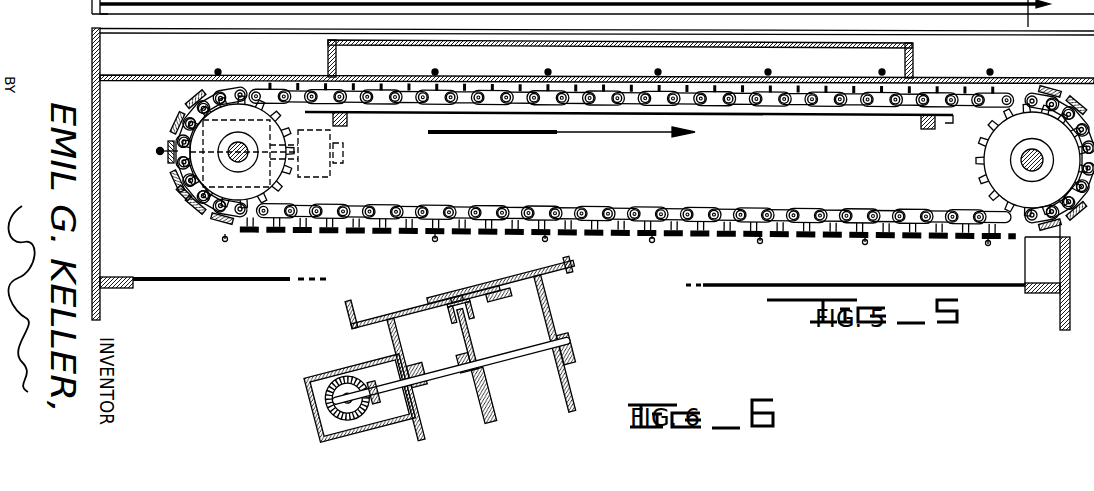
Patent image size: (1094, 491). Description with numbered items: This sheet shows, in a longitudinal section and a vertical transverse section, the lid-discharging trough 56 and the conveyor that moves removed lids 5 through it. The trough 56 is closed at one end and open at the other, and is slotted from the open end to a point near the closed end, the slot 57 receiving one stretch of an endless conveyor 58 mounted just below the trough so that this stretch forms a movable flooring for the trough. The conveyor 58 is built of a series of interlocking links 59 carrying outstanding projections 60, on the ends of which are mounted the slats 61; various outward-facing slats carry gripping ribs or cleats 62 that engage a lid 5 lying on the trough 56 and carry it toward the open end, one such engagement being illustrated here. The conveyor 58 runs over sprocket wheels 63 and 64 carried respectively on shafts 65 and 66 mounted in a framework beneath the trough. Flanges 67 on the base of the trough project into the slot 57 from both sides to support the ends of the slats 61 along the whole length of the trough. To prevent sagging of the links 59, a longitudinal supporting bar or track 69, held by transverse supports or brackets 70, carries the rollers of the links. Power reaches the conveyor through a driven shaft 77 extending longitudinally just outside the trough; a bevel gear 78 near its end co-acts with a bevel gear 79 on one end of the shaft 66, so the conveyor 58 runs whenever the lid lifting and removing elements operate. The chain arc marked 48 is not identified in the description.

In FIG. 5, the lid 5 is at (914, 53).
In FIG. 5, the conveyor chain 48 is at (184, 222).
In FIG. 5, the trough 56 is at (107, 49).
In FIG. 6, the trough 56 is at (347, 305).
In FIG. 6, the slot 57 is at (500, 286).
In FIG. 5, the endless conveyor 58 is at (424, 209).
In FIG. 6, the endless conveyor 58 is at (480, 310).
In FIG. 5, the interlocking links 59 is at (662, 212).
In FIG. 5, the outstanding projections 60 is at (195, 103).
In FIG. 5, the slats 61 is at (483, 78).
In FIG. 5, the gripping ribs or cleats 62 is at (328, 70).
In FIG. 5, the sprocket wheel 63 is at (217, 168).
In FIG. 5, the sprocket wheel 64 is at (1005, 175).
In FIG. 6, the sprocket wheel 64 is at (494, 393).
In FIG. 5, the shaft 65 is at (157, 150).
In FIG. 5, the shaft 66 is at (1024, 155).
In FIG. 6, the shaft 66 is at (568, 343).
In FIG. 6, the flanges 67 is at (410, 316).
In FIG. 5, the longitudinal supporting bar or track 69 is at (630, 112).
In FIG. 5, the transverse supports or brackets 70 is at (340, 122).
In FIG. 6, the driven shaft 77 is at (314, 385).
In FIG. 6, the bevel gear 78 is at (330, 400).
In FIG. 6, the bevel gear 79 is at (370, 372).